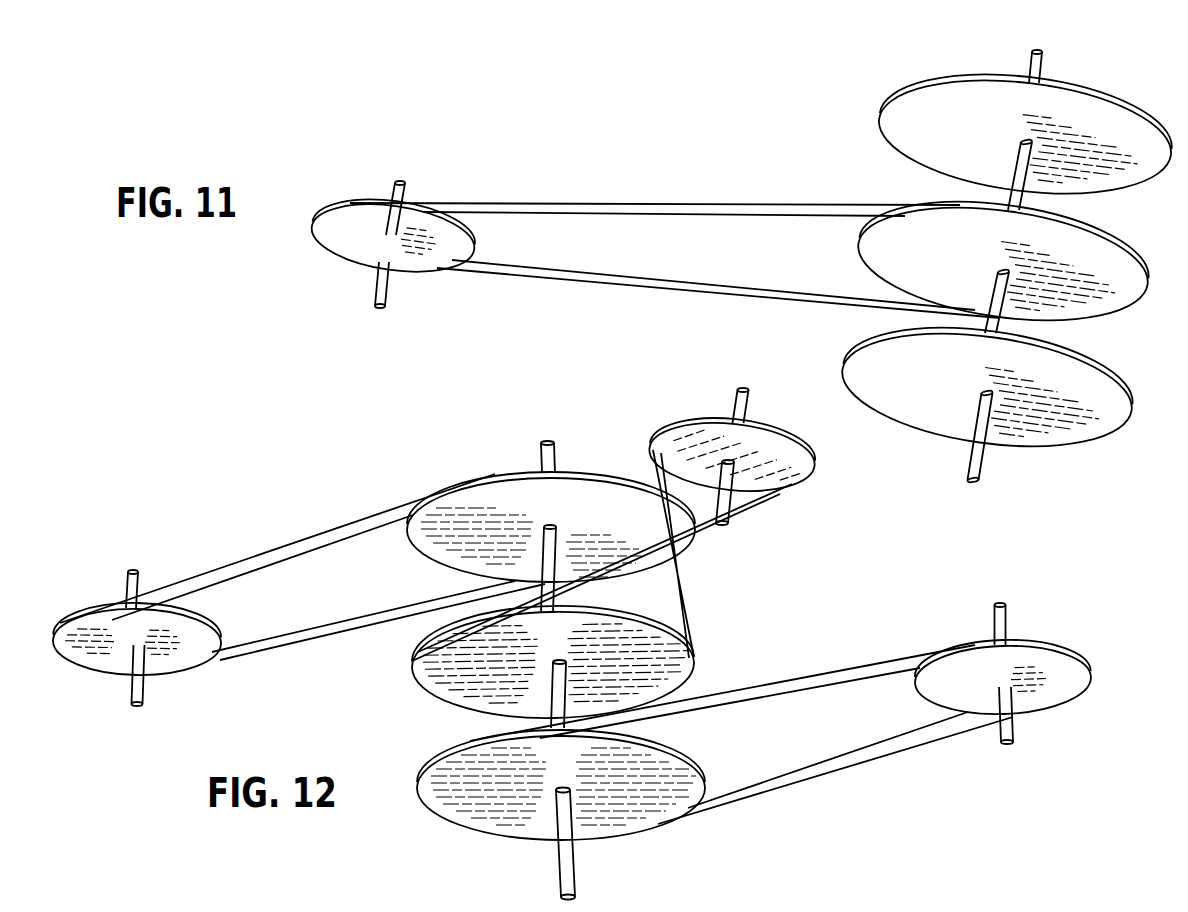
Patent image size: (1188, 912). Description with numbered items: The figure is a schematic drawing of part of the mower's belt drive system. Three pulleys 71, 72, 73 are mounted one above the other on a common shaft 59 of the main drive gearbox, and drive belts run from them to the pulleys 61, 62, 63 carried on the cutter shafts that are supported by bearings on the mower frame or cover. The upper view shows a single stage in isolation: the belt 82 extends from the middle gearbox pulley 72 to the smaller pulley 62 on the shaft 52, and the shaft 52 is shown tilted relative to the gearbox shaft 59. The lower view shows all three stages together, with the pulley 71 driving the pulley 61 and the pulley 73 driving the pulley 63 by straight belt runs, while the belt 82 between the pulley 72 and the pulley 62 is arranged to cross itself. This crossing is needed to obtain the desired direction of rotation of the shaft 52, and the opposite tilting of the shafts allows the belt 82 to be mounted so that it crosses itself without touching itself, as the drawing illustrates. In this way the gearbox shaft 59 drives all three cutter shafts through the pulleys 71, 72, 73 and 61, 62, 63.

In FIG. 11, the shaft 52 is at (397, 192).
In FIG. 11, the shaft 59 is at (1043, 55).
In FIG. 12, the shaft 59 is at (575, 880).
In FIG. 12, the pulley 61 is at (173, 657).
In FIG. 11, the pulley 62 is at (362, 237).
In FIG. 12, the pulley 62 is at (781, 481).
In FIG. 12, the pulley 63 is at (980, 696).
In FIG. 11, the pulley 71 is at (981, 141).
In FIG. 12, the pulley 71 is at (613, 530).
In FIG. 11, the pulley 72 is at (955, 268).
In FIG. 12, the pulley 72 is at (647, 680).
In FIG. 11, the pulley 73 is at (944, 395).
In FIG. 12, the pulley 73 is at (647, 788).
In FIG. 11, the drive belt 82 is at (661, 285).